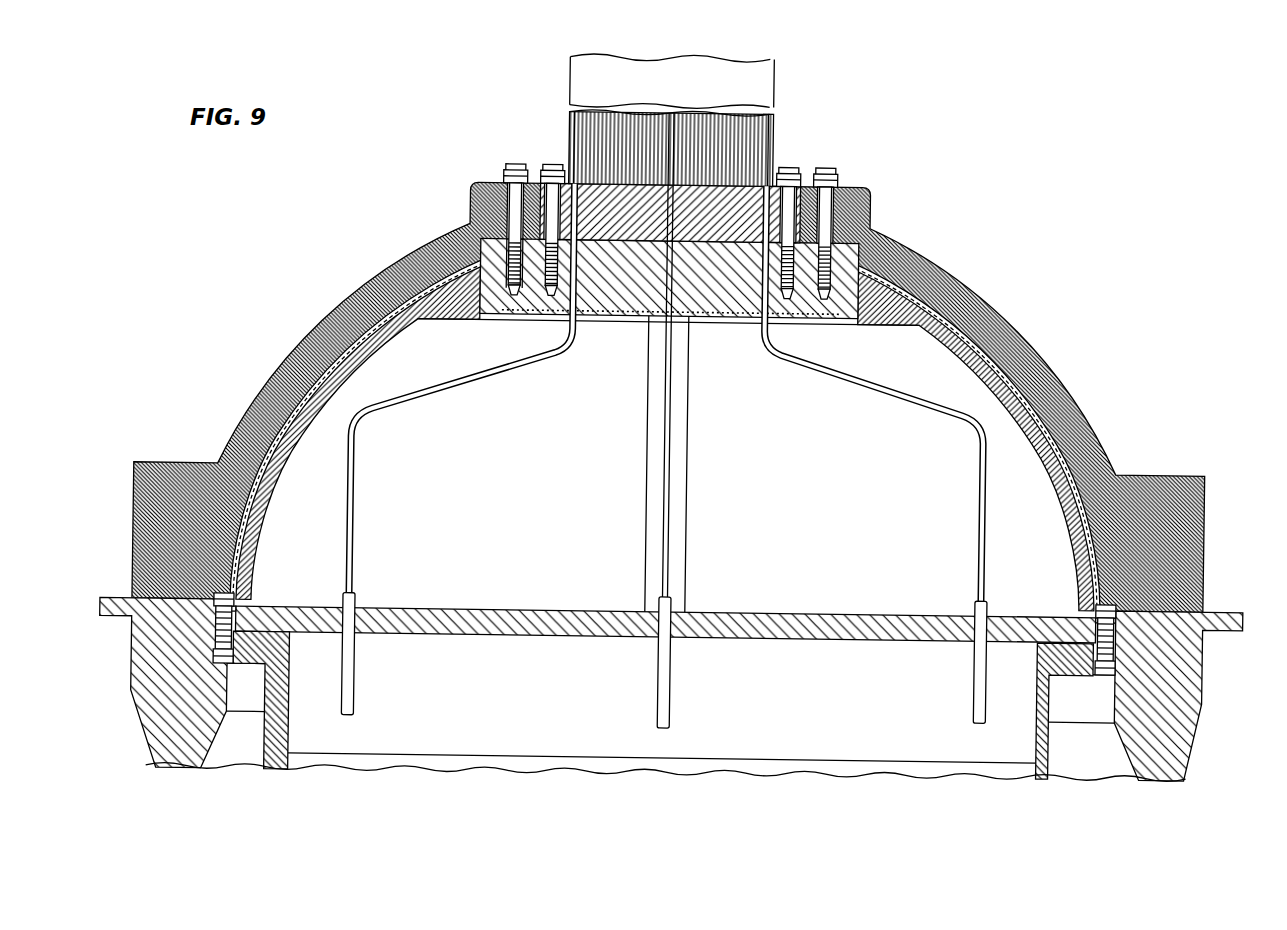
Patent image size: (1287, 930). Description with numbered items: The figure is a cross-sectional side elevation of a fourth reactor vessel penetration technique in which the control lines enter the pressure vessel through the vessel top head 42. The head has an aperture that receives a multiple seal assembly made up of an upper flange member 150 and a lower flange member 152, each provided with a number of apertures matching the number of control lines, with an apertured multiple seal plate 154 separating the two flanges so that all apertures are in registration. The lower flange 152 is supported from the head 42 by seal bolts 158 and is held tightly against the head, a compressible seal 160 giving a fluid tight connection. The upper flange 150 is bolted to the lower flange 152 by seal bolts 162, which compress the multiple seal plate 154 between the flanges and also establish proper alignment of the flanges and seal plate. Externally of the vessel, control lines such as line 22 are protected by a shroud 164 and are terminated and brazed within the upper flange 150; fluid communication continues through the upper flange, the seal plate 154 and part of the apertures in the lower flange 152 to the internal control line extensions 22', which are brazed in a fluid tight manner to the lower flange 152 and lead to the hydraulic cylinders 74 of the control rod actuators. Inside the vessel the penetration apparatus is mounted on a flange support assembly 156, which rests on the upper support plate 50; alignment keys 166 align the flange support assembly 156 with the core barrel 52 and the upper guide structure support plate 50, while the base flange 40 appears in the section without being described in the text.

The shroud 164 is at (700, 42).
The control line 22 is at (699, 130).
The upper flange member 150 is at (745, 190).
The seal bolts 162 is at (550, 160).
The seal bolts 158 is at (508, 167).
The compressible seal 160 is at (495, 283).
The multiple seal plate 154 is at (627, 243).
The lower flange member 152 is at (738, 300).
The internal control line extension 22' is at (668, 391).
The vessel top head 42 is at (1023, 335).
The flange support assembly 156 is at (1060, 488).
The upper support plate 50 is at (824, 612).
The hydraulic cylinders 74 is at (984, 676).
The alignment keys 166 is at (213, 646).
The base flange 40 is at (1197, 692).
The core barrel 52 is at (1060, 760).